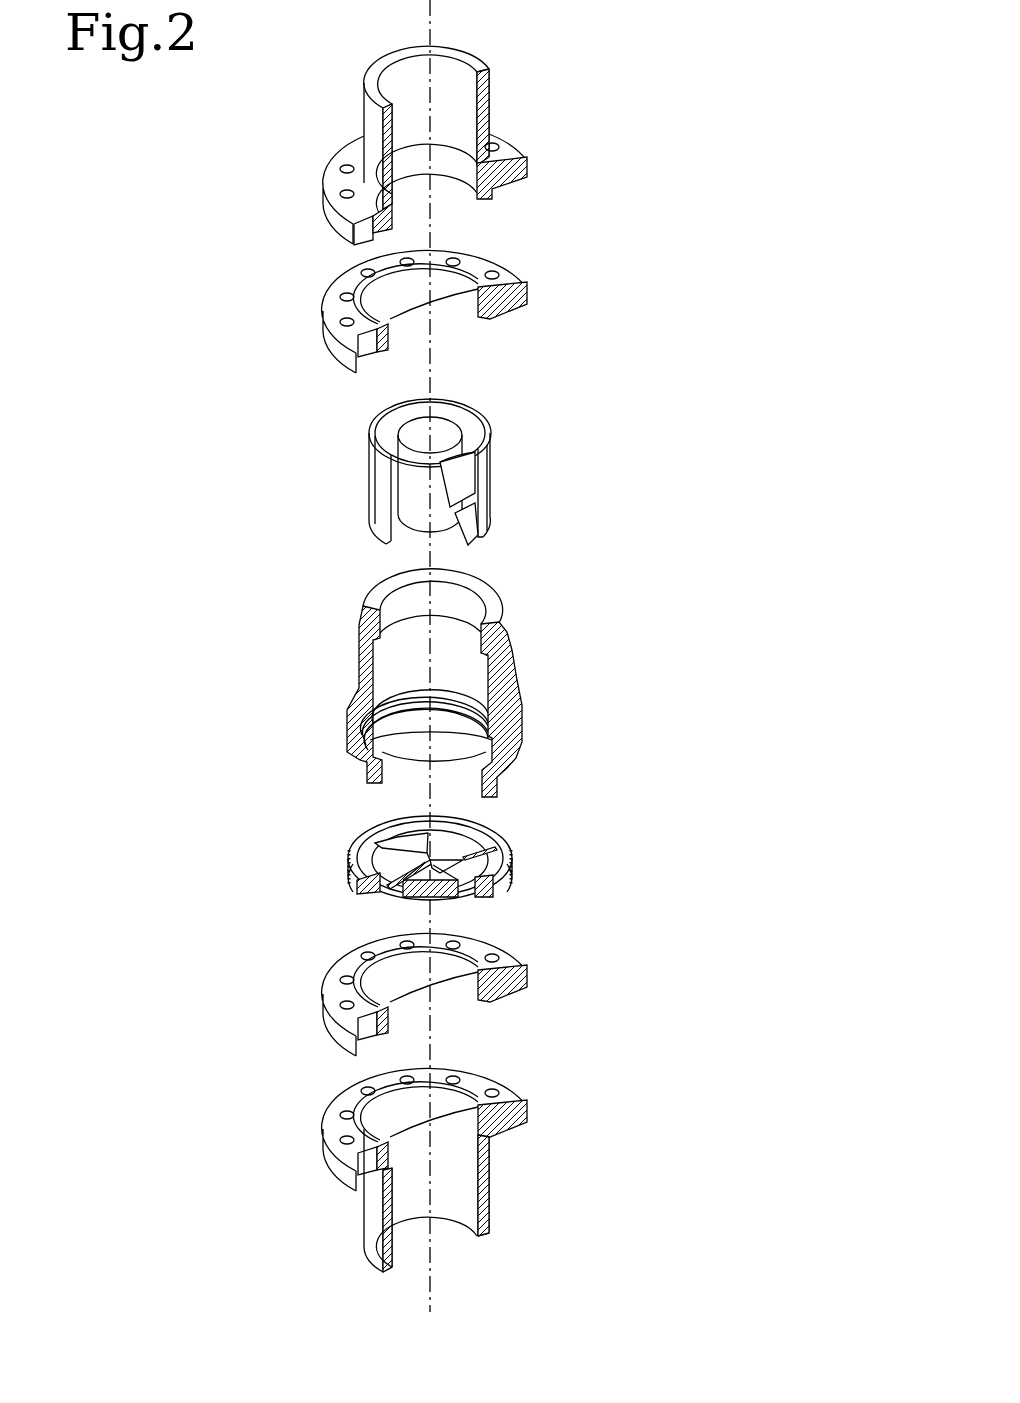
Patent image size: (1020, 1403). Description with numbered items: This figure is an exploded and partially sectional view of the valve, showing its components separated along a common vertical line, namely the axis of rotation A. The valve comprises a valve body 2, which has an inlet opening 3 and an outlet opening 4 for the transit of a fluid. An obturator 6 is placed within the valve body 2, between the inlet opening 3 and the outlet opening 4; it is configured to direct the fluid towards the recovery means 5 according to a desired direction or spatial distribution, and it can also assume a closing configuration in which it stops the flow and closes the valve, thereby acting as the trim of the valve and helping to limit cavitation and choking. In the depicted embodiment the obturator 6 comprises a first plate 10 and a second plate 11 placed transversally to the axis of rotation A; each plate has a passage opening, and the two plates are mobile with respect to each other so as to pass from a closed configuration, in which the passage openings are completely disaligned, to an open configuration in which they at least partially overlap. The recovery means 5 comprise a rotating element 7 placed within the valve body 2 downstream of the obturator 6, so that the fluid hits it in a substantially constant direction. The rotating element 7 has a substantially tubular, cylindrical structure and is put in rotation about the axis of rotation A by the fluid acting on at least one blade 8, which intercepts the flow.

The axis of rotation A is at (430, 30).
The valve body 2 is at (525, 687).
The inlet opening 3 is at (458, 978).
The outlet opening 4 is at (460, 300).
The recovery means 5 is at (514, 471).
The obturator 6 is at (530, 867).
The rotating element 7 is at (470, 455).
The blade 8 is at (470, 517).
The first plate 10 is at (458, 840).
The second plate 11 is at (490, 887).